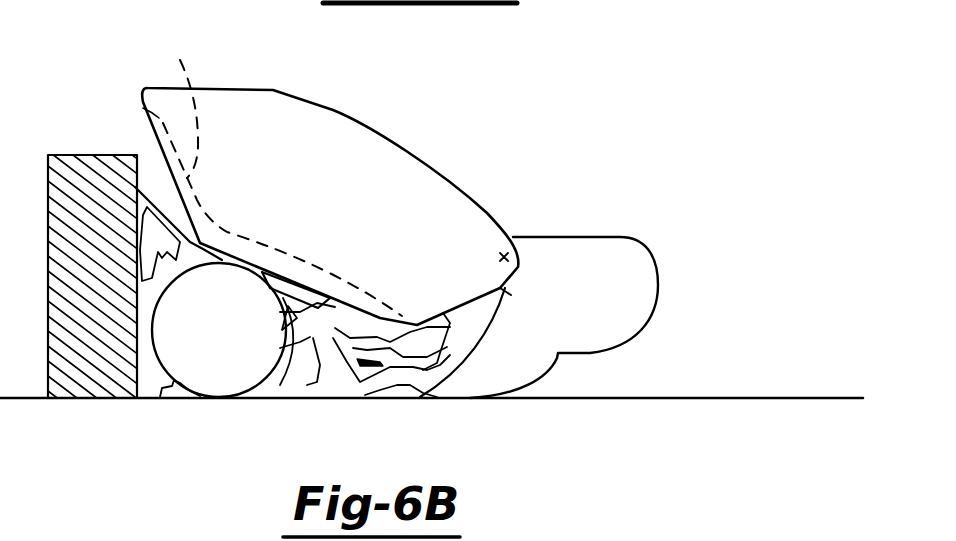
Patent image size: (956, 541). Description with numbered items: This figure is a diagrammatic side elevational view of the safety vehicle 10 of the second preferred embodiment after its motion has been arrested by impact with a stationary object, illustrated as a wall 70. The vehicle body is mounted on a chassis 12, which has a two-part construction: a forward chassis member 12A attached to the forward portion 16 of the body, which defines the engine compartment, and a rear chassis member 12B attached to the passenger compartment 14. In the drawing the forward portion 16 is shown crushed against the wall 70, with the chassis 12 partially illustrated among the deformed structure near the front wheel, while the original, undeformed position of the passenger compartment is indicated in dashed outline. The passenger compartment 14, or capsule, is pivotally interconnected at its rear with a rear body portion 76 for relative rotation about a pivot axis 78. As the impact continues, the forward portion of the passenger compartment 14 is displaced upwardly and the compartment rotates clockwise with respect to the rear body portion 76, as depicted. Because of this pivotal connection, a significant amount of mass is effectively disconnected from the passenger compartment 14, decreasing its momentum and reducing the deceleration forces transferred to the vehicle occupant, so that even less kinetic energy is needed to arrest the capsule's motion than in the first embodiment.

The safety vehicle 10 is at (152, 60).
The chassis 12 is at (330, 348).
The forward chassis member 12A is at (362, 296).
The rear chassis member 12B is at (282, 173).
The passenger compartment 14 is at (380, 150).
The forward portion 16 is at (145, 343).
The wall 70 is at (85, 168).
The rear body portion 76 is at (600, 260).
The pivot axis 78 is at (503, 255).